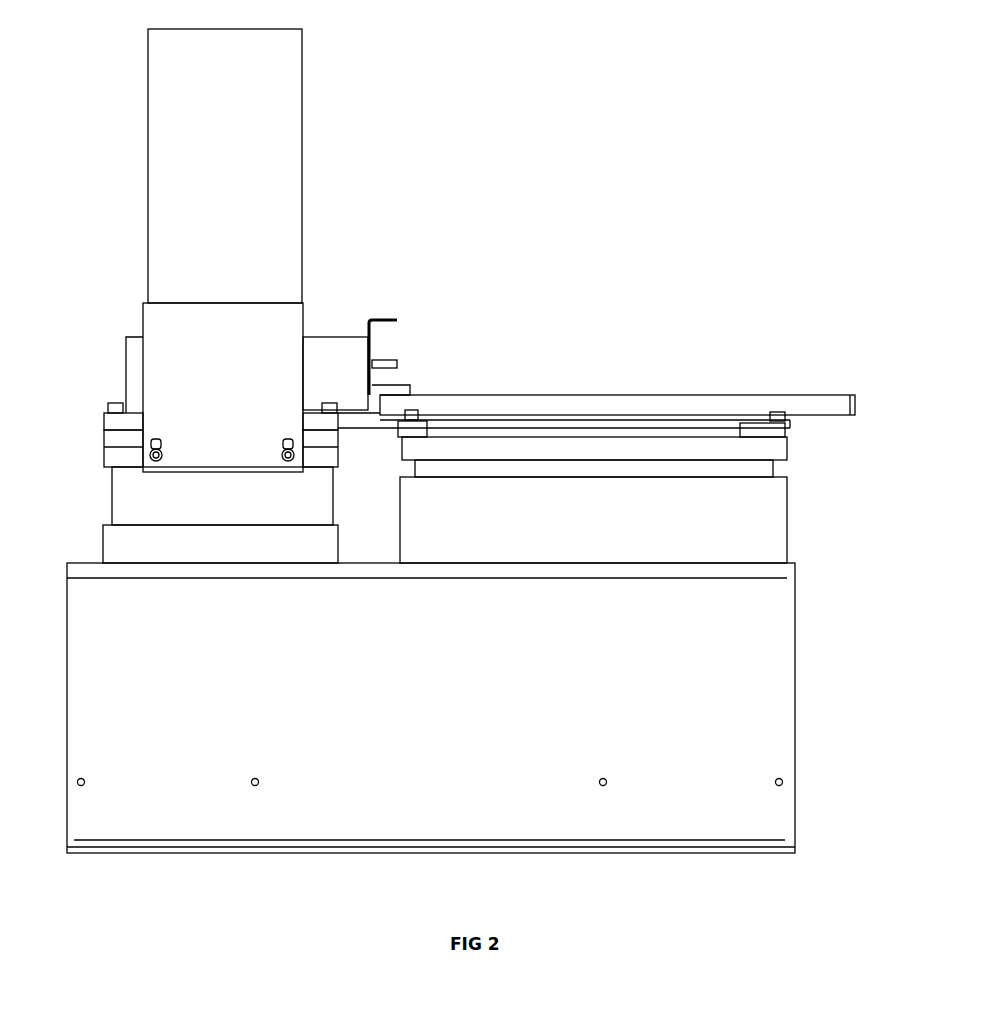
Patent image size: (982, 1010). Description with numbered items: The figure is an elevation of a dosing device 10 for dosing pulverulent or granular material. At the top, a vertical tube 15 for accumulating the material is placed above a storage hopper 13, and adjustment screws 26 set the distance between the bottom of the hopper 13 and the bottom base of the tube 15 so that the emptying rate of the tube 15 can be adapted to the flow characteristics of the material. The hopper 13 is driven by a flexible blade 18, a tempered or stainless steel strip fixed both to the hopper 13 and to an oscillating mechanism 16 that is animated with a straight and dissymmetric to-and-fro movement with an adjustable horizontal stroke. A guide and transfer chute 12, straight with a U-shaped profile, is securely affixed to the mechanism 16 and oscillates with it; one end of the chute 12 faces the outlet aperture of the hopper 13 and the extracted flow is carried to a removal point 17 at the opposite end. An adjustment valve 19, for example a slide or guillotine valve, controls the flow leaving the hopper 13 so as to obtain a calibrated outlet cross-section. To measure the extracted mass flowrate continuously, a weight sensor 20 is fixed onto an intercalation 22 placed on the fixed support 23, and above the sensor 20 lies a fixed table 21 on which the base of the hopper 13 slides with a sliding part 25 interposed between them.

The dosing device 10 is at (257, 867).
The guide and transfer chute 12 is at (573, 408).
The storage hopper 13 is at (330, 348).
The vertical tube 15 is at (280, 174).
The oscillating mechanism 16 is at (593, 500).
The removal point 17 is at (850, 394).
The flexible blade 18 is at (374, 432).
The adjustment valve 19 is at (385, 321).
The weight sensor 20 is at (127, 500).
The fixed table 21 is at (116, 455).
The intercalation 22 is at (118, 552).
The fixed support 23 is at (767, 733).
The sliding part 25 is at (115, 438).
The adjustment screws 26 is at (280, 455).